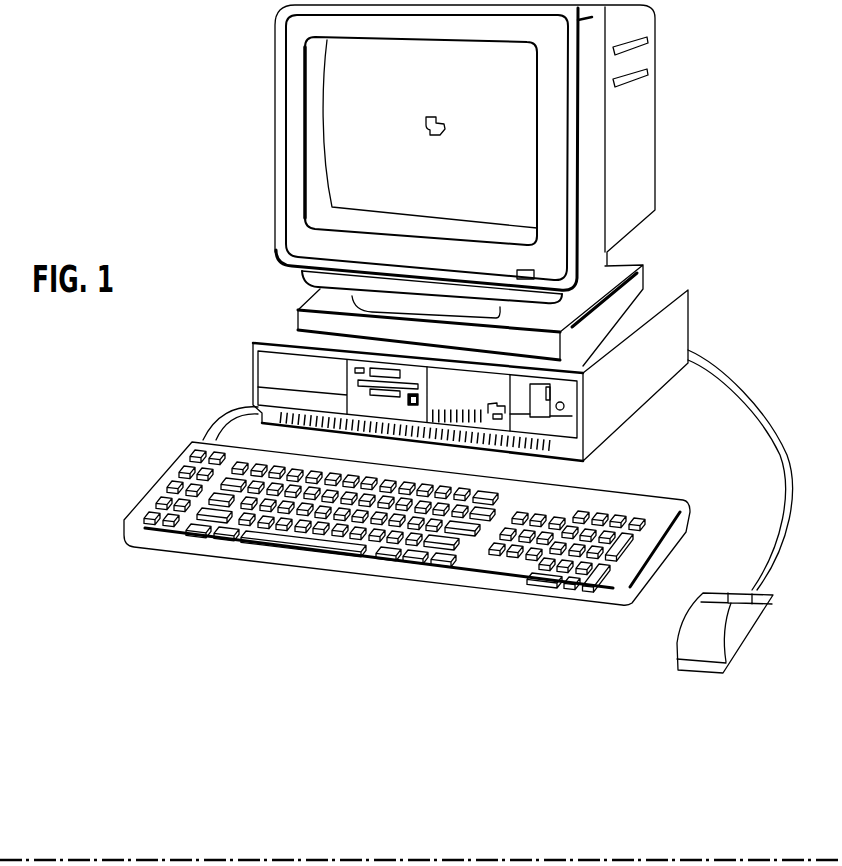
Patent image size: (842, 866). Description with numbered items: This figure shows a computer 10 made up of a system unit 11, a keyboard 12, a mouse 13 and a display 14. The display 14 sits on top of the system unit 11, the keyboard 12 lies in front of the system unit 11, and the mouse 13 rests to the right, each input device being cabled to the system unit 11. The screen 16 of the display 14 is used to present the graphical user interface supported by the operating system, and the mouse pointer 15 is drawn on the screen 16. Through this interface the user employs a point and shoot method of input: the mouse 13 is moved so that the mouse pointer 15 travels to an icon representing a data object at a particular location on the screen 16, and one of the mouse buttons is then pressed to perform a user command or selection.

The computer 10 is at (220, 211).
The system unit 11 is at (253, 365).
The keyboard 12 is at (153, 551).
The mouse 13 is at (765, 623).
The display 14 is at (275, 128).
The mouse pointer 15 is at (428, 115).
The screen 16 is at (392, 166).